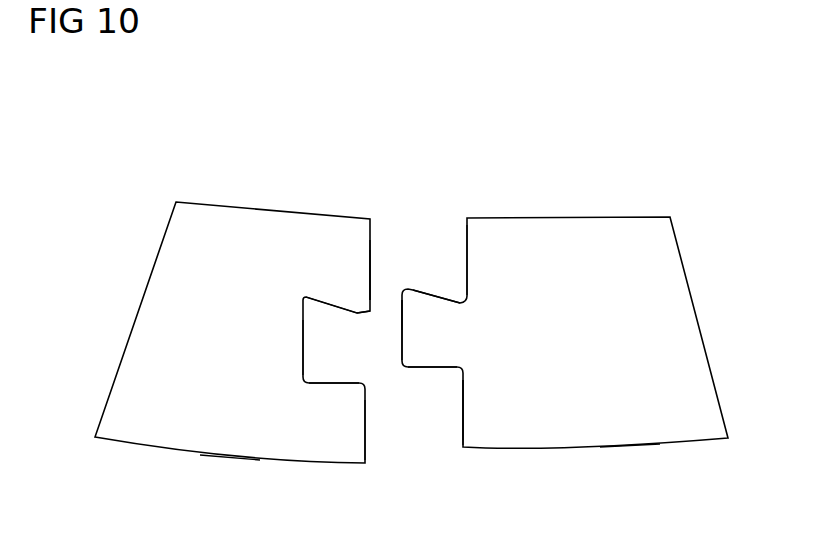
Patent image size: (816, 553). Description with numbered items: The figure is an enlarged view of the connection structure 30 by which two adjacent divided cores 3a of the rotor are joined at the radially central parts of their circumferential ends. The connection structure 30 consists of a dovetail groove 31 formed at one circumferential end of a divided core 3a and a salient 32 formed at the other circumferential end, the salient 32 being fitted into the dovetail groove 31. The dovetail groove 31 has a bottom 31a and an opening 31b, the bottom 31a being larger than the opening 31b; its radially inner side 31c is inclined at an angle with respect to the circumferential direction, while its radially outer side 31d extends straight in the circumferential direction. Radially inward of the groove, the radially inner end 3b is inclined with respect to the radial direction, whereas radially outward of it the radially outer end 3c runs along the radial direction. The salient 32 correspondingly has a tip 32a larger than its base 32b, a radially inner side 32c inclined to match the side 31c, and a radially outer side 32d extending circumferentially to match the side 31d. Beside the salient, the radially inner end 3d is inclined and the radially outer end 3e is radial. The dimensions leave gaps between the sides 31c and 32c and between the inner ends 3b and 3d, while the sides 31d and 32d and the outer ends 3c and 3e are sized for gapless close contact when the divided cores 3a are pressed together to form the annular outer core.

The connection structure 30 is at (423, 175).
The dovetail groove 31 is at (323, 332).
The bottom 31a is at (303, 352).
The opening 31b is at (357, 330).
The radially inner side 31c is at (334, 303).
The radially outer side 31d is at (350, 383).
The salient 32 is at (427, 312).
The tip 32a is at (401, 333).
The base 32b is at (462, 335).
The radially inner side 32c is at (458, 303).
The radially outer side 32d is at (445, 370).
The divided core 3a is at (233, 430).
The radially inner end 3b is at (371, 275).
The radially outer end 3c is at (365, 428).
The radially inner end 3d is at (466, 282).
The radially outer end 3e is at (463, 405).